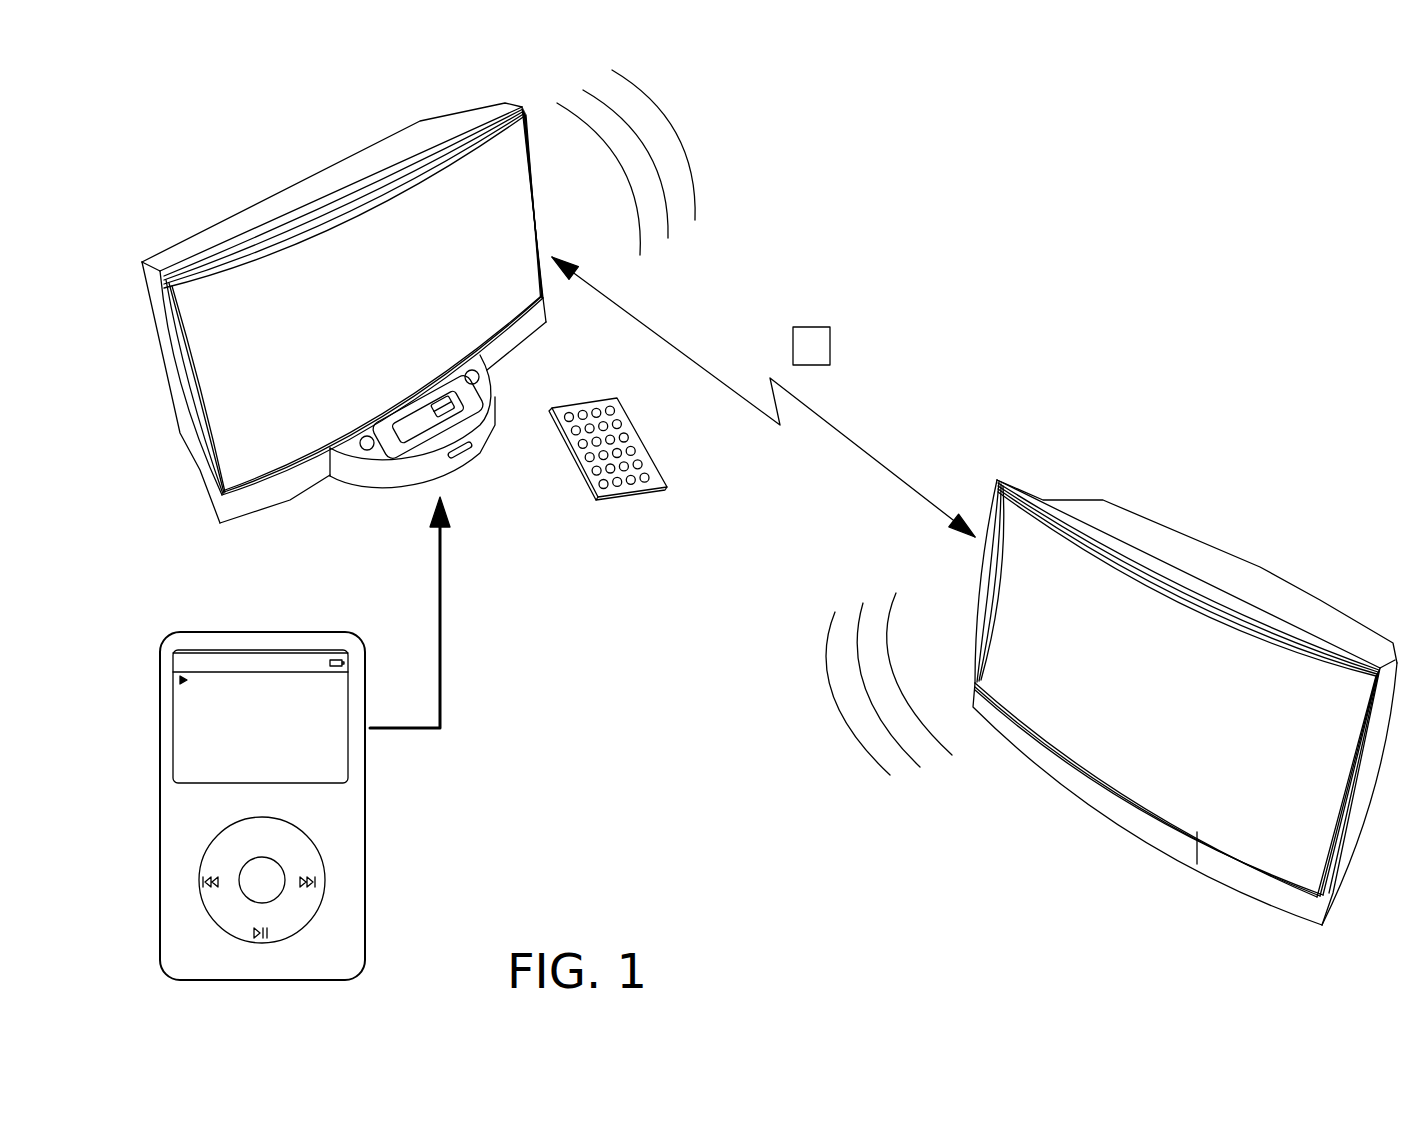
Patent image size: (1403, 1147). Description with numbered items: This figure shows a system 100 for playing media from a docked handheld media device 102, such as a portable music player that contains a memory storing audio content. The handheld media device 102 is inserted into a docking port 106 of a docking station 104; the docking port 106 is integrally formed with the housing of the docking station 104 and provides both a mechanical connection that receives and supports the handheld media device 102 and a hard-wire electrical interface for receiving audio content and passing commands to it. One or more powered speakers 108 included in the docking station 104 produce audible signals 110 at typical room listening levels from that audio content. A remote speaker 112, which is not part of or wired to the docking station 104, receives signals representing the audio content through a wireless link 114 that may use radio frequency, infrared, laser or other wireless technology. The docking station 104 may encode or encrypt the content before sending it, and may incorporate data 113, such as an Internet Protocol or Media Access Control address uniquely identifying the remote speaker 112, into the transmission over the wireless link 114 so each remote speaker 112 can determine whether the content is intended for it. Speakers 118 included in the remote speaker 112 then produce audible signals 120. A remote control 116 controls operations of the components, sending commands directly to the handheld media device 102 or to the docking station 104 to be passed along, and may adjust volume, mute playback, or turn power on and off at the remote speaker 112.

The system 100 is at (1073, 129).
The handheld media device 102 is at (363, 868).
The docking station 104 is at (183, 410).
The docking port 106 is at (450, 413).
The powered speakers 108 is at (513, 183).
The audible signals 110 is at (687, 158).
The remote speaker 112 is at (1200, 540).
The data 113 is at (830, 328).
The wireless link 114 is at (832, 423).
The remote control 116 is at (597, 500).
The speakers 118 is at (1338, 712).
The audible signals 120 is at (828, 658).